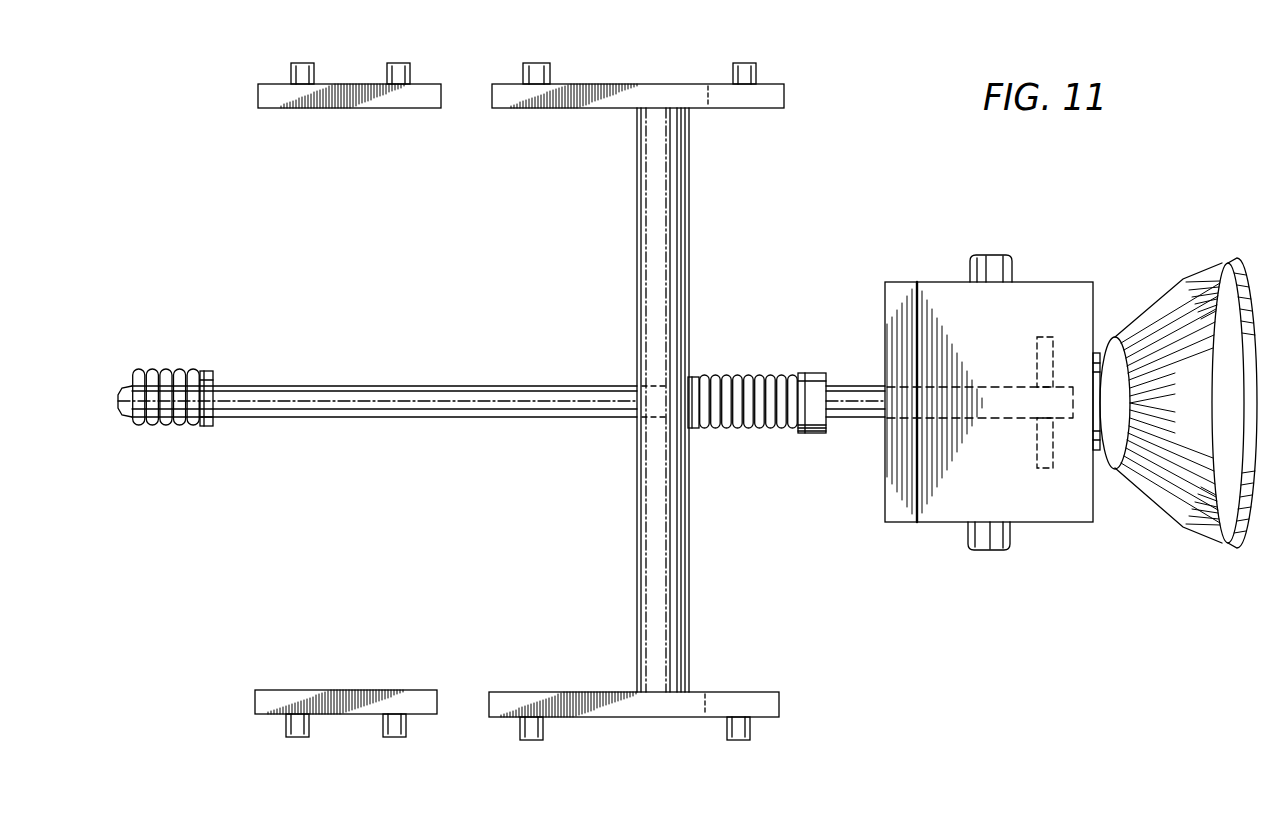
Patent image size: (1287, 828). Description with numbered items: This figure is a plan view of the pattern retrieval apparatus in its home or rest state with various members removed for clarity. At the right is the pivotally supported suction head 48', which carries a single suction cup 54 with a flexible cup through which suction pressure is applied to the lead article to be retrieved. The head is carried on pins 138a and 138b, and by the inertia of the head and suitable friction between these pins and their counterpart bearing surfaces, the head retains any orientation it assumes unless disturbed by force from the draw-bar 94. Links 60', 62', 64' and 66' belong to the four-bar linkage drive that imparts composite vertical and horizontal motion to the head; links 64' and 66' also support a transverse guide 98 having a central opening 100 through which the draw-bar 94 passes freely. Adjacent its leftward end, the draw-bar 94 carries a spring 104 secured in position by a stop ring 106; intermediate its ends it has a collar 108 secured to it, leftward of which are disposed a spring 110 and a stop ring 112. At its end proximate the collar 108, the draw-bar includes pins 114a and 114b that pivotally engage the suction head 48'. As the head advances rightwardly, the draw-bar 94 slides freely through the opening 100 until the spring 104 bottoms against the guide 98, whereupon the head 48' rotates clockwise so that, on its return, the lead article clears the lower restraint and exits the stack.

The suction head 48' is at (992, 376).
The suction cup 54 is at (1238, 280).
The link 60' is at (349, 67).
The link 62' is at (346, 685).
The link 64' is at (638, 67).
The link 66' is at (634, 688).
The draw-bar 94 is at (404, 385).
The transverse guide 98 is at (677, 217).
The central opening 100 is at (645, 384).
The spring 104 is at (178, 368).
The stop ring 106 is at (209, 371).
The collar 108 is at (815, 378).
The spring 110 is at (745, 430).
The stop ring 112 is at (693, 378).
The pin 114a is at (1038, 445).
The pin 114b is at (1040, 358).
The pin 138a is at (987, 542).
The pin 138b is at (1000, 257).